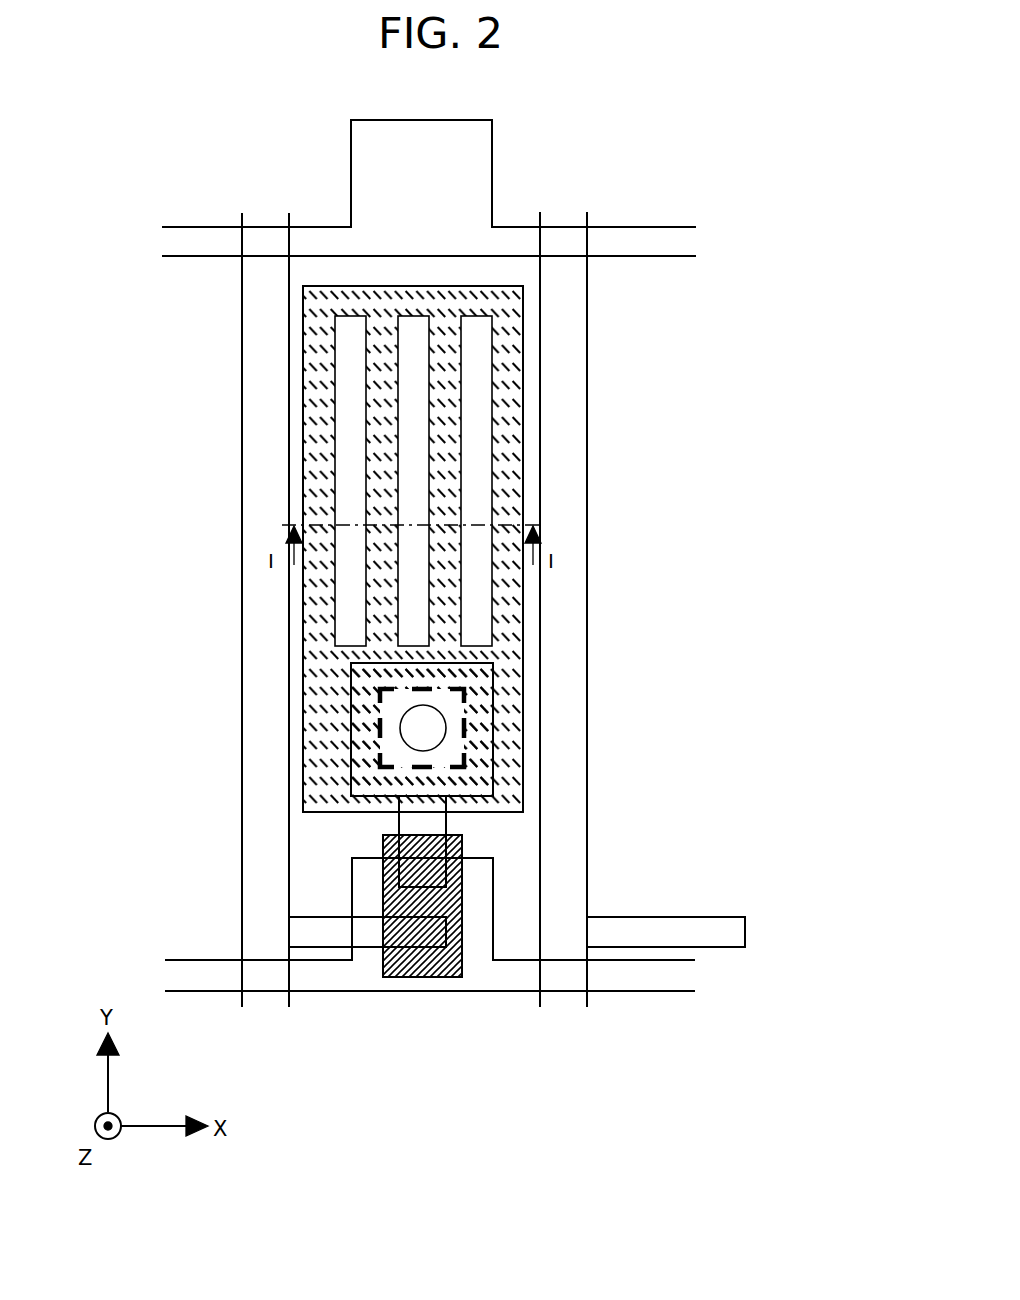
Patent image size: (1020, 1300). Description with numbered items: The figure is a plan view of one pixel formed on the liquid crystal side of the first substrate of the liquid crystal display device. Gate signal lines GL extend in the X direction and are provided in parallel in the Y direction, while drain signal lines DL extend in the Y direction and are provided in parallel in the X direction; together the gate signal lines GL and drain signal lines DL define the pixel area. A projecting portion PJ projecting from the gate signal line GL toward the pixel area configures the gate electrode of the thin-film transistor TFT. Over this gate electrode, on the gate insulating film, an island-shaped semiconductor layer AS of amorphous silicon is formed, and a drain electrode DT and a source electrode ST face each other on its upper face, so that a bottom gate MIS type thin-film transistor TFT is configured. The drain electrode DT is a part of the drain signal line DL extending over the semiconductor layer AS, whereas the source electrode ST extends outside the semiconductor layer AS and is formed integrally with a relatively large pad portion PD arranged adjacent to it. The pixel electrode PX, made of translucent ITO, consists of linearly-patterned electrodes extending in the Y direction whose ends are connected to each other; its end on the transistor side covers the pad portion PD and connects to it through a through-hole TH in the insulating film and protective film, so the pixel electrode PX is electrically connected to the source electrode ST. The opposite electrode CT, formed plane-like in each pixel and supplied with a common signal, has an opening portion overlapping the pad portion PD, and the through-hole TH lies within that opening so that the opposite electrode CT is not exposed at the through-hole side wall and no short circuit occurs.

The gate signal line GL is at (407, 237).
The drain signal line DL is at (253, 365).
The pixel electrode PX is at (325, 452).
The pad portion PD is at (353, 698).
The through-hole TH is at (380, 746).
The opposite electrode CT is at (428, 733).
The semiconductor layer AS is at (382, 878).
The source electrode ST is at (433, 865).
The drain electrode DT is at (413, 927).
The thin-film transistor TFT is at (412, 967).
The projecting portion PJ is at (477, 887).